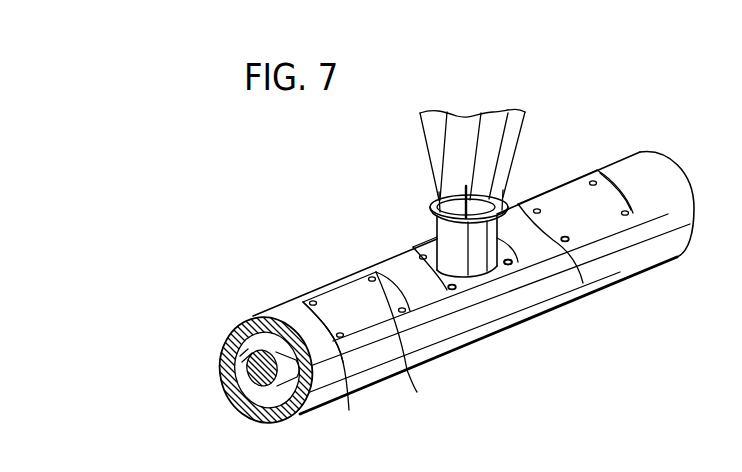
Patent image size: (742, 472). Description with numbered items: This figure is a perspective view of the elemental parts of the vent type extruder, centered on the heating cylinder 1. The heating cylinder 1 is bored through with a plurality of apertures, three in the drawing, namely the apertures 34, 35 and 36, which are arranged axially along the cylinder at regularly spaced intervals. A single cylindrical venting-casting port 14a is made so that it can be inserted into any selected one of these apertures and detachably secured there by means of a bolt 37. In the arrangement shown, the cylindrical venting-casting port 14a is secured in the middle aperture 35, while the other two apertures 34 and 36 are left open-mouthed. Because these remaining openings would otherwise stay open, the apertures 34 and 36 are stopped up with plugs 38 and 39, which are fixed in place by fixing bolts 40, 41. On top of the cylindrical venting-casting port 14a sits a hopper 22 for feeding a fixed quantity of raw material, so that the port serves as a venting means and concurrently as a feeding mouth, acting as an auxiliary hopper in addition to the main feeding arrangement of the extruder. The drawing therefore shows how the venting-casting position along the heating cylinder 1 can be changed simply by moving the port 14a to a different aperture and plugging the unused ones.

The heating cylinder 1 is at (655, 267).
The cylindrical venting-casting port 14a is at (442, 242).
The hopper 22 is at (508, 132).
The aperture 34 is at (630, 198).
The aperture 35 is at (518, 262).
The aperture 36 is at (417, 392).
The bolt 37 is at (507, 264).
The plug 38 is at (564, 198).
The plug 39 is at (327, 298).
The fixing bolt 40 is at (583, 283).
The fixing bolt 41 is at (349, 410).